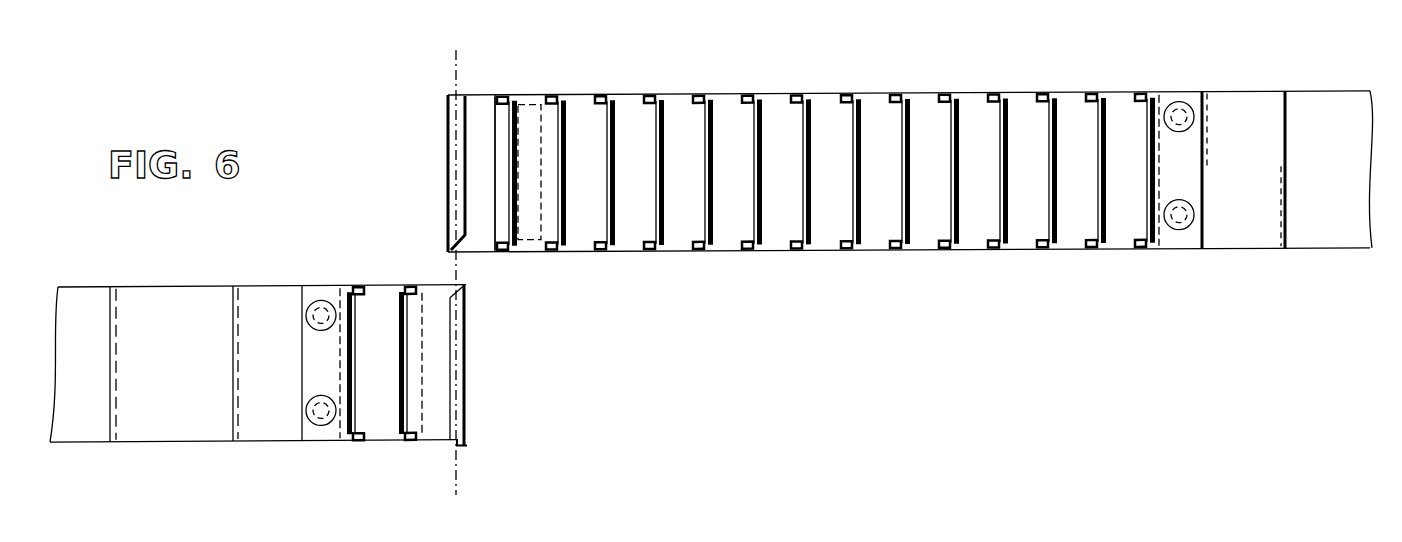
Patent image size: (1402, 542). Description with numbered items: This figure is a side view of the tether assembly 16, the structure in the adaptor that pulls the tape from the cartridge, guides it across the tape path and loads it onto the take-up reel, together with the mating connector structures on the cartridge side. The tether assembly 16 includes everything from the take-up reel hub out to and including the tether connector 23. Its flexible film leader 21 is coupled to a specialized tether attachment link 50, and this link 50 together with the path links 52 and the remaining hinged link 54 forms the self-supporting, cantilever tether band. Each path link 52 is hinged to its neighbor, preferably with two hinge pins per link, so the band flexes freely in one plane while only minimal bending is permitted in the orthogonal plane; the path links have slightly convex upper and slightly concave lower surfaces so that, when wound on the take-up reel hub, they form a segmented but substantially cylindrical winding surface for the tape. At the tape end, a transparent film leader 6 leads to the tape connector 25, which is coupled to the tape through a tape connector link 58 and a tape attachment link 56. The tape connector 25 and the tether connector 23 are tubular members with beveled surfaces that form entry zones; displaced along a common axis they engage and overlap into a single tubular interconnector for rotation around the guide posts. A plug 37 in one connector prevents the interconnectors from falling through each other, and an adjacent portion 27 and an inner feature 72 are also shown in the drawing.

The transparent film leader 6 is at (156, 371).
The tether assembly 16 is at (925, 252).
The leader 21 is at (1314, 181).
The tether connector 23 is at (479, 94).
The tape connector 25 is at (437, 283).
The coupling member 27 is at (466, 447).
The plug 37 is at (455, 447).
The tether attachment link 50 is at (1188, 92).
The path link 52 is at (822, 93).
The hinged link 54 is at (542, 93).
The tape attachment link 56 is at (322, 285).
The tape connector link 58 is at (382, 283).
The insert 72 is at (527, 133).